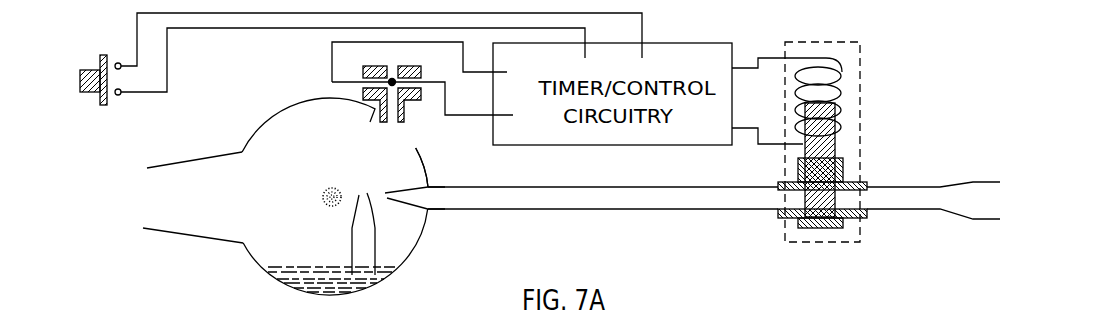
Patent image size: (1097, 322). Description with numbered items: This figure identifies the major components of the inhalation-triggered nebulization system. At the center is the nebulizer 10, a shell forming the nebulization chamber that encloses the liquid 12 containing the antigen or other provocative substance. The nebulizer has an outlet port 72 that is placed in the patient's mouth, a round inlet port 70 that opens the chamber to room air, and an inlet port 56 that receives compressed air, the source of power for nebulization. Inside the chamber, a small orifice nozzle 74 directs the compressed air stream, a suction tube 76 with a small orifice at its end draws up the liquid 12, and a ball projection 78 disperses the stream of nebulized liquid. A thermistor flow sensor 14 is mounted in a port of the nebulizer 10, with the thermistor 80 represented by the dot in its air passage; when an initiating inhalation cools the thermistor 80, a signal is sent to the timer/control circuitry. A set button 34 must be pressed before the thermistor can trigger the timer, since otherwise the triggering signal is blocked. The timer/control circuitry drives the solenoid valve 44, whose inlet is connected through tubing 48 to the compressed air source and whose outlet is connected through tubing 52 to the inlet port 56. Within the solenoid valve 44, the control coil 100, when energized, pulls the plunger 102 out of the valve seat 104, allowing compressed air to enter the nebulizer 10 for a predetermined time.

The nebulizer 10 is at (258, 130).
The liquid 12 is at (283, 273).
The thermistor flow sensor 14 is at (356, 69).
The set button 34 is at (88, 65).
The solenoid valve 44 is at (877, 62).
The tubing 48 is at (898, 197).
The tubing 52 is at (657, 197).
The inlet port 56 is at (430, 208).
The inlet port 70 is at (411, 154).
The outlet port 72 is at (155, 228).
The small orifice nozzle 74 is at (389, 197).
The suction tube 76 is at (358, 198).
The ball projection 78 is at (322, 188).
The thermistor 80 is at (385, 83).
The solenoid valve control coil 100 is at (798, 72).
The plunger 102 is at (813, 163).
The valve seat 104 is at (807, 220).